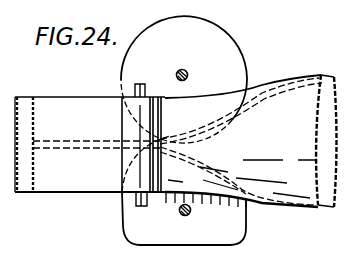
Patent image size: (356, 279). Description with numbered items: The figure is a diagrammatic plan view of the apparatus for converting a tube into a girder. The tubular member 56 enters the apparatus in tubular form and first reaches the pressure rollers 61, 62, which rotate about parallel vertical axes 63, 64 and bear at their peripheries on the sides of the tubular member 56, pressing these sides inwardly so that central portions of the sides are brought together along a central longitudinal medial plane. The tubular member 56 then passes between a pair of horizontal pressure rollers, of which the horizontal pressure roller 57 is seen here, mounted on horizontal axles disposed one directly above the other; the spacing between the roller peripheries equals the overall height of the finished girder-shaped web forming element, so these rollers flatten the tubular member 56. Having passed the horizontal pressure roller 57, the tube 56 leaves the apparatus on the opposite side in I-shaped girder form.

The tubular member 56 is at (287, 131).
The horizontal pressure roller 57 is at (126, 160).
The pressure roller 61 is at (213, 236).
The pressure roller 62 is at (218, 56).
The vertical axis 63 is at (180, 70).
The vertical axis 64 is at (180, 213).